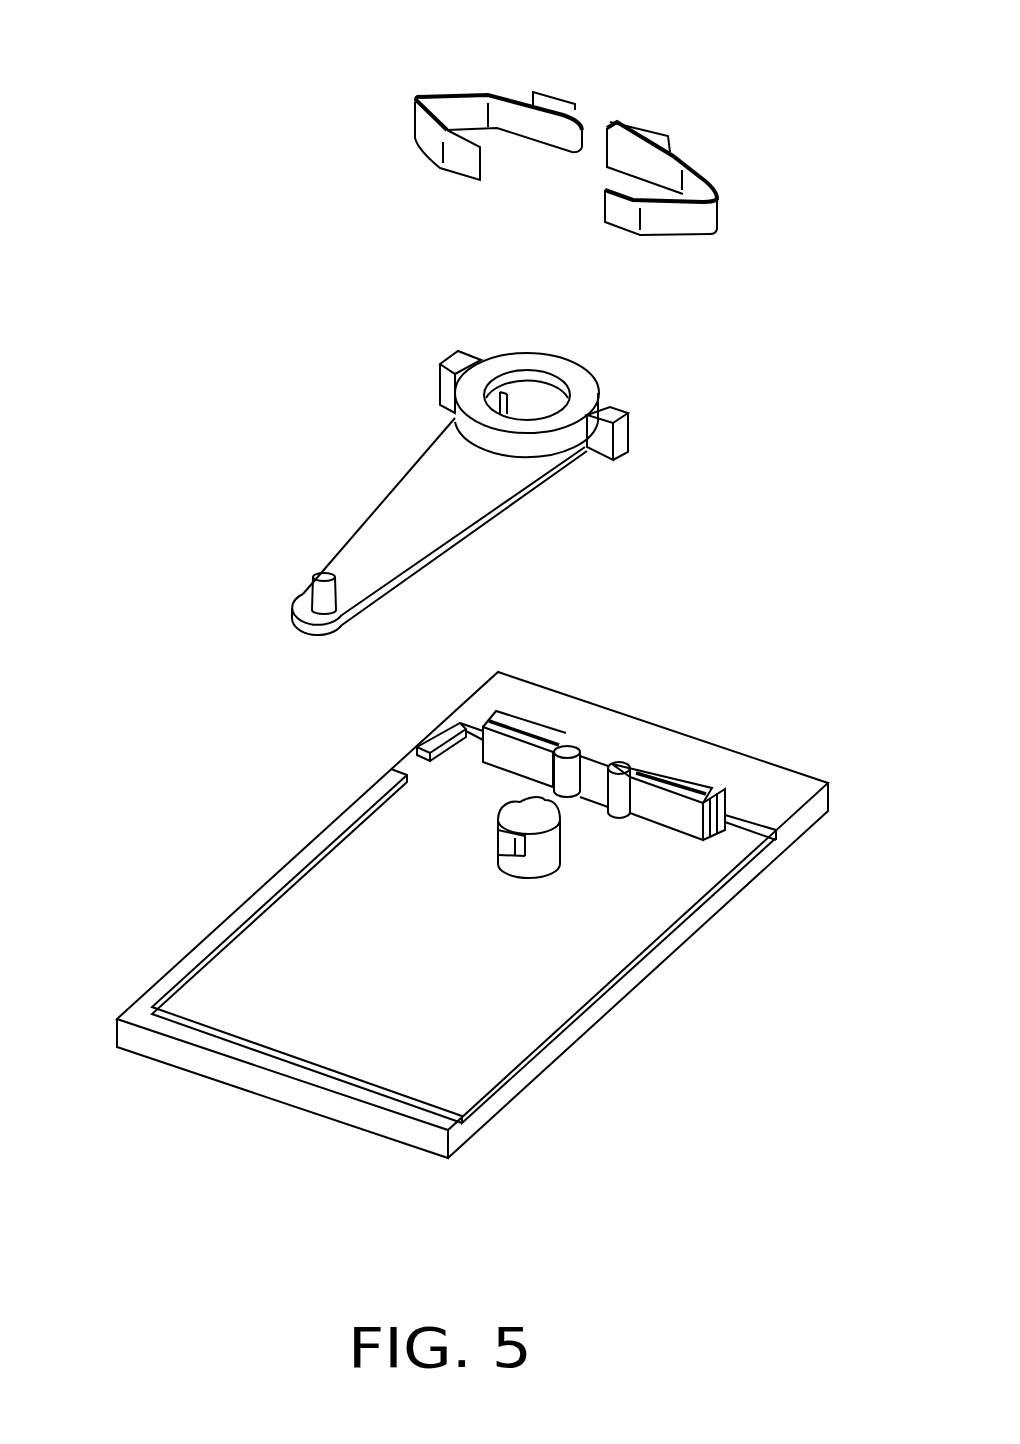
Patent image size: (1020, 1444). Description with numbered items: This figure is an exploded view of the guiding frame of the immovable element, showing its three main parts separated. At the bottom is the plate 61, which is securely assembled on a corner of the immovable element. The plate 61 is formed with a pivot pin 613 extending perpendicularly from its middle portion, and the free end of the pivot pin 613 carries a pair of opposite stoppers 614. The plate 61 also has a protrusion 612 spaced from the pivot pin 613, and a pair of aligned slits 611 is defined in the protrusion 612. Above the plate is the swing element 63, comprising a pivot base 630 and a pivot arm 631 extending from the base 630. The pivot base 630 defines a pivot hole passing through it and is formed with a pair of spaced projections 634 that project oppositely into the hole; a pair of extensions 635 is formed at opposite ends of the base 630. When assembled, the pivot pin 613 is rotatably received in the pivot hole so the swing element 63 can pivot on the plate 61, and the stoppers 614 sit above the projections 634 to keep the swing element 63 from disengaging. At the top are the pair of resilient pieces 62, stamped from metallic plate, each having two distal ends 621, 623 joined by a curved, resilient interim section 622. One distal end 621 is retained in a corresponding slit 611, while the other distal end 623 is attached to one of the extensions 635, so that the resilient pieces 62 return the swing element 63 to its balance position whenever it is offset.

The plate 61 is at (172, 914).
The slits 611 is at (540, 732).
The protrusion 612 is at (657, 767).
The pivot pin 613 is at (539, 822).
The stoppers 614 is at (512, 837).
The resilient pieces 62 is at (493, 122).
The distal end 621 is at (560, 100).
The interim section 622 is at (452, 97).
The distal end 623 is at (462, 178).
The swing element 63 is at (477, 487).
The pivot base 630 is at (590, 378).
The pivot arm 631 is at (427, 525).
The projections 634 is at (527, 387).
The extensions 635 is at (617, 410).